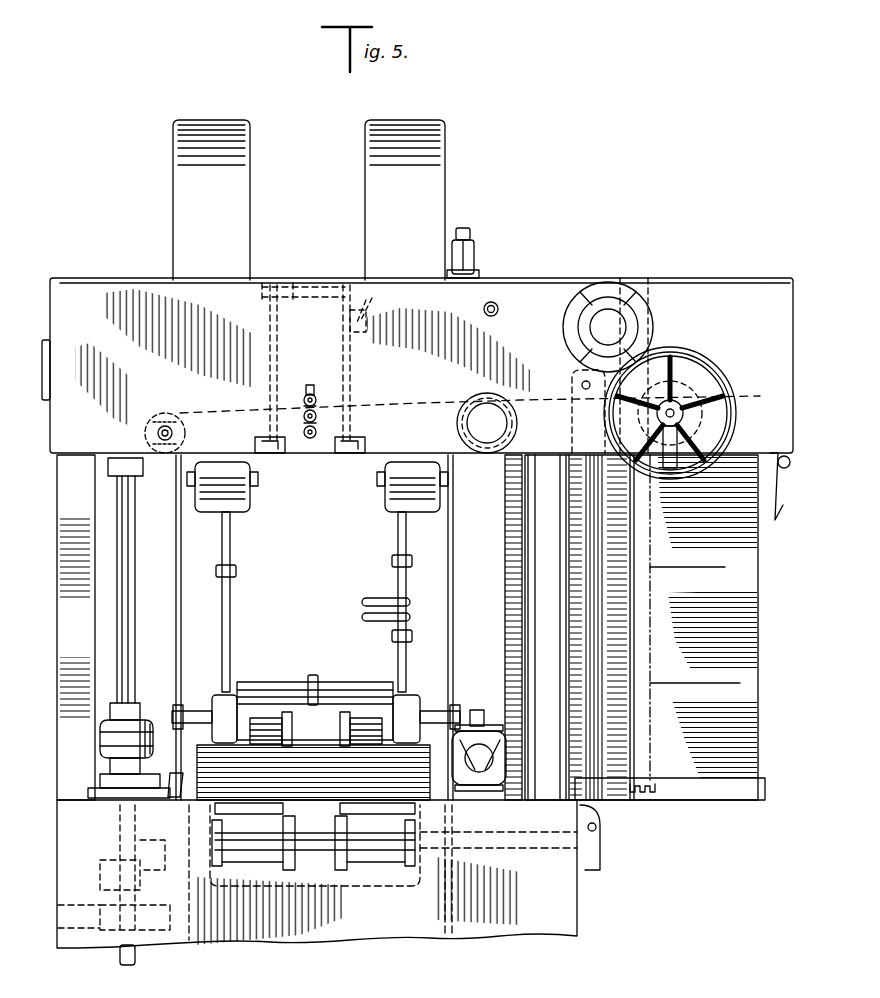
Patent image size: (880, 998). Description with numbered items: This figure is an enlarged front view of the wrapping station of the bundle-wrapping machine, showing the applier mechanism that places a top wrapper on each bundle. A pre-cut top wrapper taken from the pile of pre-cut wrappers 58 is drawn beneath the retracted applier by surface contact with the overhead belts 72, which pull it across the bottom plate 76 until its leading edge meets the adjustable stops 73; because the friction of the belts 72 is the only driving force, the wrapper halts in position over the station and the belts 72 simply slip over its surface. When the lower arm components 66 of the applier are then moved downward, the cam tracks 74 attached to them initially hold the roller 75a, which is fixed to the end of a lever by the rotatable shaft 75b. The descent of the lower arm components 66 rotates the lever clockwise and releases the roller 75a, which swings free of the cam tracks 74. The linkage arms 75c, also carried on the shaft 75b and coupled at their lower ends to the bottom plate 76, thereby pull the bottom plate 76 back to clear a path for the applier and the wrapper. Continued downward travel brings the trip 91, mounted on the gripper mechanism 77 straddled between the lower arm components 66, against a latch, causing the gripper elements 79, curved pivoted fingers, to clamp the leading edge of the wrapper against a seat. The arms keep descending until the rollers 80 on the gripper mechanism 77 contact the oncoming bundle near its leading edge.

The pre-cut wrappers 58 is at (755, 617).
The lower arm components 66 is at (398, 533).
The overhead belts 72 is at (414, 402).
The adjustable stops 73 is at (182, 444).
The cam tracks 74 is at (364, 600).
The roller 75a is at (366, 326).
The rotatable shaft 75b is at (296, 298).
The linkage arms 75c is at (357, 360).
The bottom plate 76 is at (318, 455).
The gripper mechanism 77 is at (376, 692).
The gripper elements 79 is at (280, 722).
The rollers 80 is at (358, 720).
The trip 91 is at (306, 688).